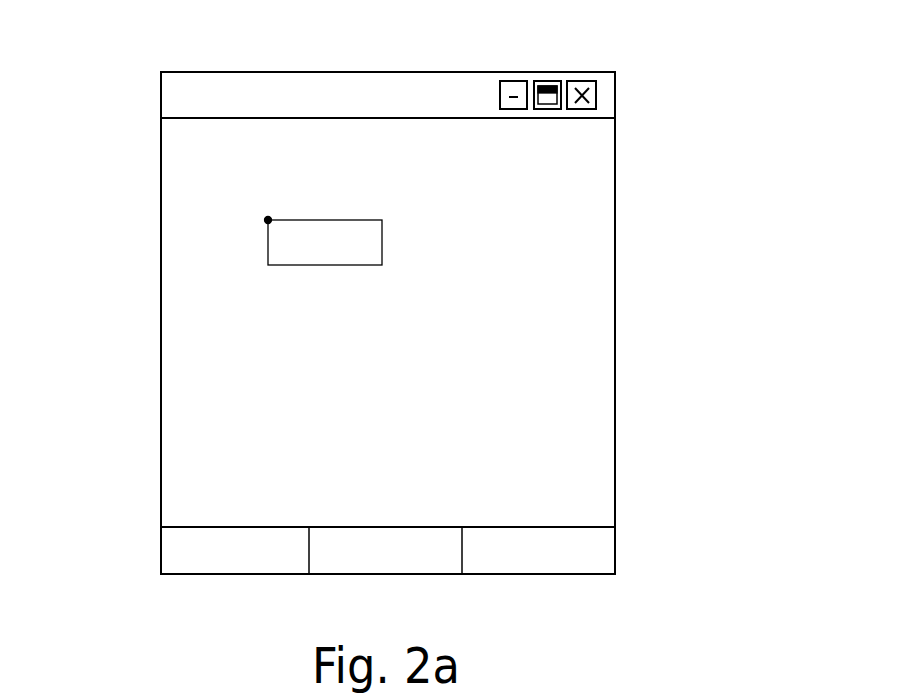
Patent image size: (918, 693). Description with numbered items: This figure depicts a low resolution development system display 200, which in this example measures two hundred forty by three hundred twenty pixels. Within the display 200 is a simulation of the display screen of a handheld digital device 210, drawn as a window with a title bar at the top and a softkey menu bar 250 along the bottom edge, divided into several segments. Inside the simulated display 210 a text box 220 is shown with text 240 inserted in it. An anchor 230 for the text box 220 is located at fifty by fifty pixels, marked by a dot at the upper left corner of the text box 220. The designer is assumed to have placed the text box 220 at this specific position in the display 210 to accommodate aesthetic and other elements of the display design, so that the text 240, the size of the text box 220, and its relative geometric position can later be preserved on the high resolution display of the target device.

The low resolution development system display 200 is at (727, 206).
The handheld digital device display screen simulation 210 is at (373, 70).
The text box 220 is at (290, 267).
The anchor 230 is at (264, 220).
The text 240 is at (320, 232).
The softkey menu bar 250 is at (168, 549).